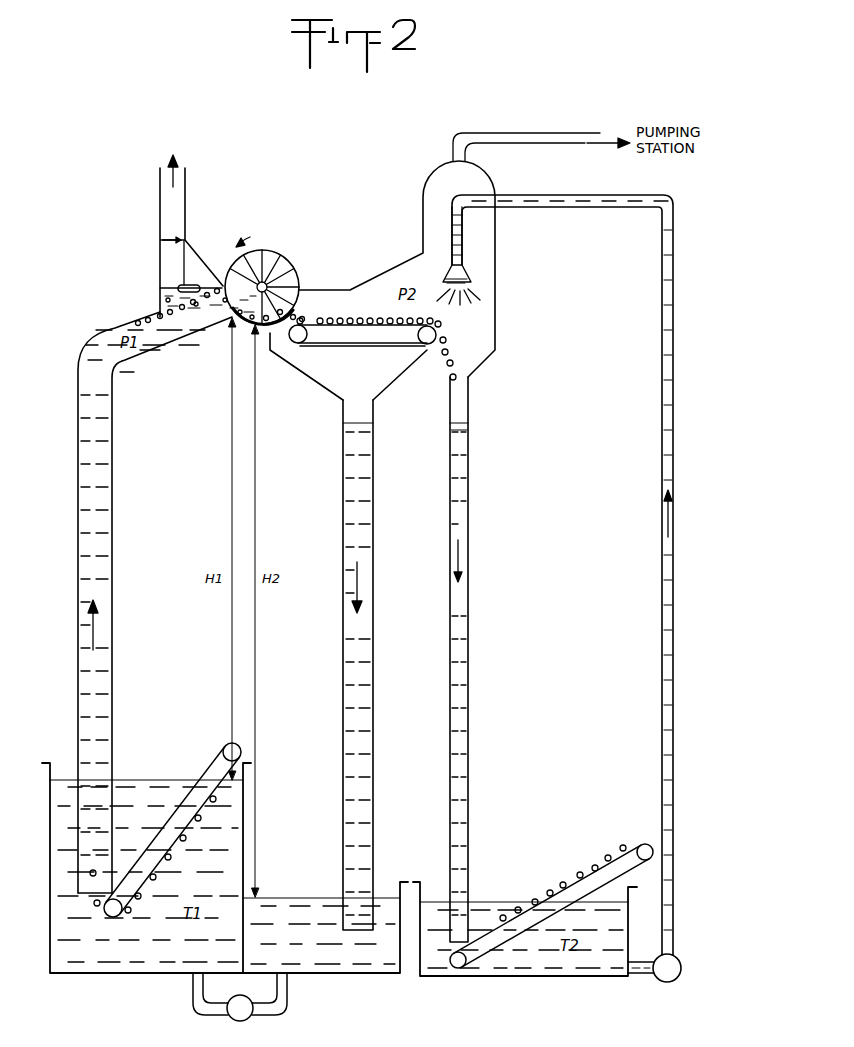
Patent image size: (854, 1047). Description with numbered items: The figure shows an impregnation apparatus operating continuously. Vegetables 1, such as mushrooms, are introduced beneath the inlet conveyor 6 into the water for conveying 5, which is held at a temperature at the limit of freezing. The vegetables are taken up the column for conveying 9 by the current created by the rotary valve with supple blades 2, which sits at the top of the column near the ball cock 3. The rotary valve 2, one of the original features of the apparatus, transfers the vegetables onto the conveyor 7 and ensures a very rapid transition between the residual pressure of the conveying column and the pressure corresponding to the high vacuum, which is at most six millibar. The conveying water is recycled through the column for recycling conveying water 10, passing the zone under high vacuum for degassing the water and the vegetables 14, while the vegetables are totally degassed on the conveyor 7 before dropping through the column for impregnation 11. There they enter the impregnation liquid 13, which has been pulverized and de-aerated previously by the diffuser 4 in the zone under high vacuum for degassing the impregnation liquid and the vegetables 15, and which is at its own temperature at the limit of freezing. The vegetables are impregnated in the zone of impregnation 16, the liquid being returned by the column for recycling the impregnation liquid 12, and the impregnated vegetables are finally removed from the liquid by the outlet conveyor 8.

The vegetables 1 is at (157, 313).
The rotary valve with supple blades 2 is at (275, 252).
The ball cock 3 is at (199, 272).
The diffuser for de-aerating the liquid 4 is at (472, 275).
The water for conveying 5 is at (125, 940).
The conveyor of vegetables (inlet) 6 is at (223, 748).
The conveyor of vegetables (placing in vacuo) 7 is at (301, 343).
The conveyor of vegetables (outlet) 8 is at (643, 845).
The column for conveying 9 is at (78, 545).
The column for recycling conveying water 10 is at (342, 727).
The column for impregnation of the vegetables 11 is at (467, 713).
The column for recycling the impregnation liquid 12 is at (678, 453).
The impregnation liquid 13 is at (533, 958).
The zone under high vacuum for degassing the water and the vegetables 14 is at (341, 380).
The zone under high vacuum for degassing the impregnation liquid and the vegetables 15 is at (468, 330).
The zone of impregnation 16 is at (460, 493).